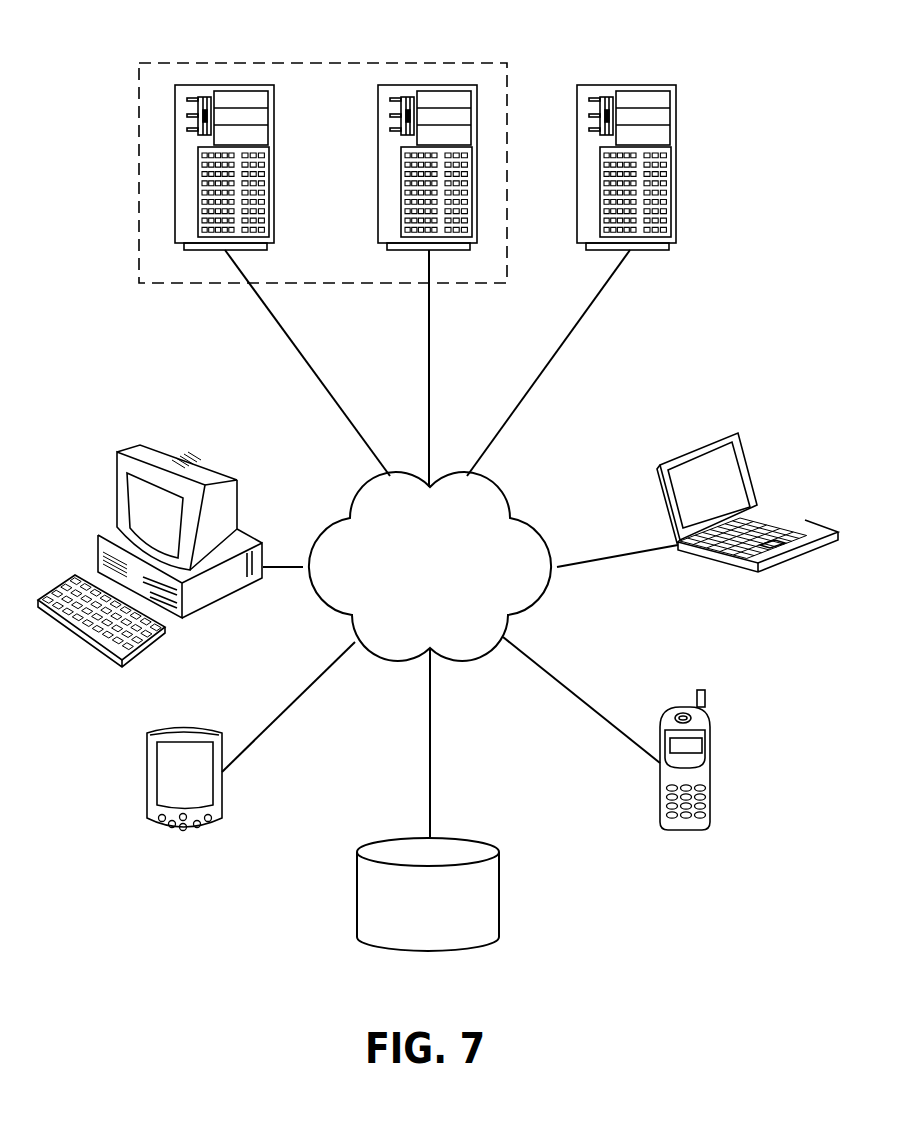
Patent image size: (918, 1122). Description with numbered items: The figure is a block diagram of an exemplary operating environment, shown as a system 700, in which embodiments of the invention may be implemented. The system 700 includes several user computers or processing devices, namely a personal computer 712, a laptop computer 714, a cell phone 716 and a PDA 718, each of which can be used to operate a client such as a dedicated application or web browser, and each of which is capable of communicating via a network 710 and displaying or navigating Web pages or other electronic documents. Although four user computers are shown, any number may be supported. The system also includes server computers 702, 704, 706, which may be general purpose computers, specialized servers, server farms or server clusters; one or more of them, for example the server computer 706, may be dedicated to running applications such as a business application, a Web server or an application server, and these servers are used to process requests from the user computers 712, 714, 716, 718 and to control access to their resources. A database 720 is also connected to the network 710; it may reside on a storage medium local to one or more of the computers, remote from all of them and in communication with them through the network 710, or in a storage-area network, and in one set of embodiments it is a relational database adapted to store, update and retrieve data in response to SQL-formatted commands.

The system 700 is at (757, 103).
The server computer 702 is at (210, 85).
The server computer 704 is at (440, 85).
The server computer 706 is at (677, 165).
The network 710 is at (447, 597).
The user computer 712 is at (165, 452).
The user computer 714 is at (708, 440).
The user computer 716 is at (682, 832).
The user computer 718 is at (182, 834).
The database 720 is at (412, 930).